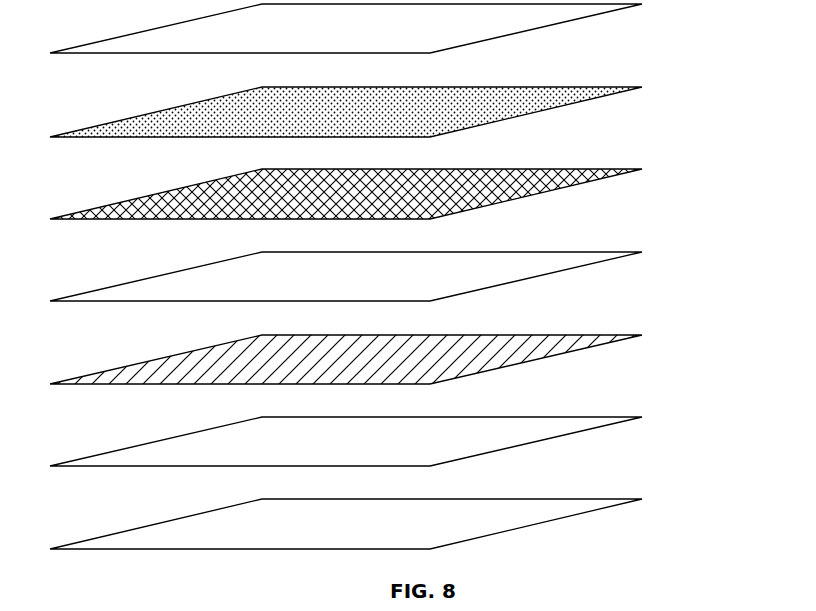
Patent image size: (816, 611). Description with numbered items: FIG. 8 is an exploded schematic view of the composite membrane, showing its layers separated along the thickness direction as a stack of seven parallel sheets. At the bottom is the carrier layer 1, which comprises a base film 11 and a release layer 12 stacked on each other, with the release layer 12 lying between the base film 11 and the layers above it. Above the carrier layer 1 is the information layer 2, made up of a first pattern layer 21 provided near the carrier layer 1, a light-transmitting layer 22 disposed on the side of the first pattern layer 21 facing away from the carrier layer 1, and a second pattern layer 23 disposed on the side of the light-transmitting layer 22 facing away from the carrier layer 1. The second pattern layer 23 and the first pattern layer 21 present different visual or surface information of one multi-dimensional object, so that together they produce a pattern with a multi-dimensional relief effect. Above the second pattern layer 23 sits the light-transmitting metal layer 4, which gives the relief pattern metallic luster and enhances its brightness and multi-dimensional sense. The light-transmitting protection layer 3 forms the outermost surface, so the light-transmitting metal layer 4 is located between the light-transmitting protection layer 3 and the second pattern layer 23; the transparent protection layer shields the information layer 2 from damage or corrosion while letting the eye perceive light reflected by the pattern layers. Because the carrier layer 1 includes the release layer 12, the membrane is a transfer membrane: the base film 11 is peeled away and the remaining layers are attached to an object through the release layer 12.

The light-transmitting protection layer 3 is at (595, 12).
The light-transmitting metal layer 4 is at (592, 97).
The information layer 2 is at (397, 278).
The second pattern layer 23 is at (597, 175).
The light-transmitting layer 22 is at (590, 257).
The first pattern layer 21 is at (367, 361).
The carrier layer 1 is at (388, 483).
The release layer 12 is at (585, 427).
The base film 11 is at (587, 499).